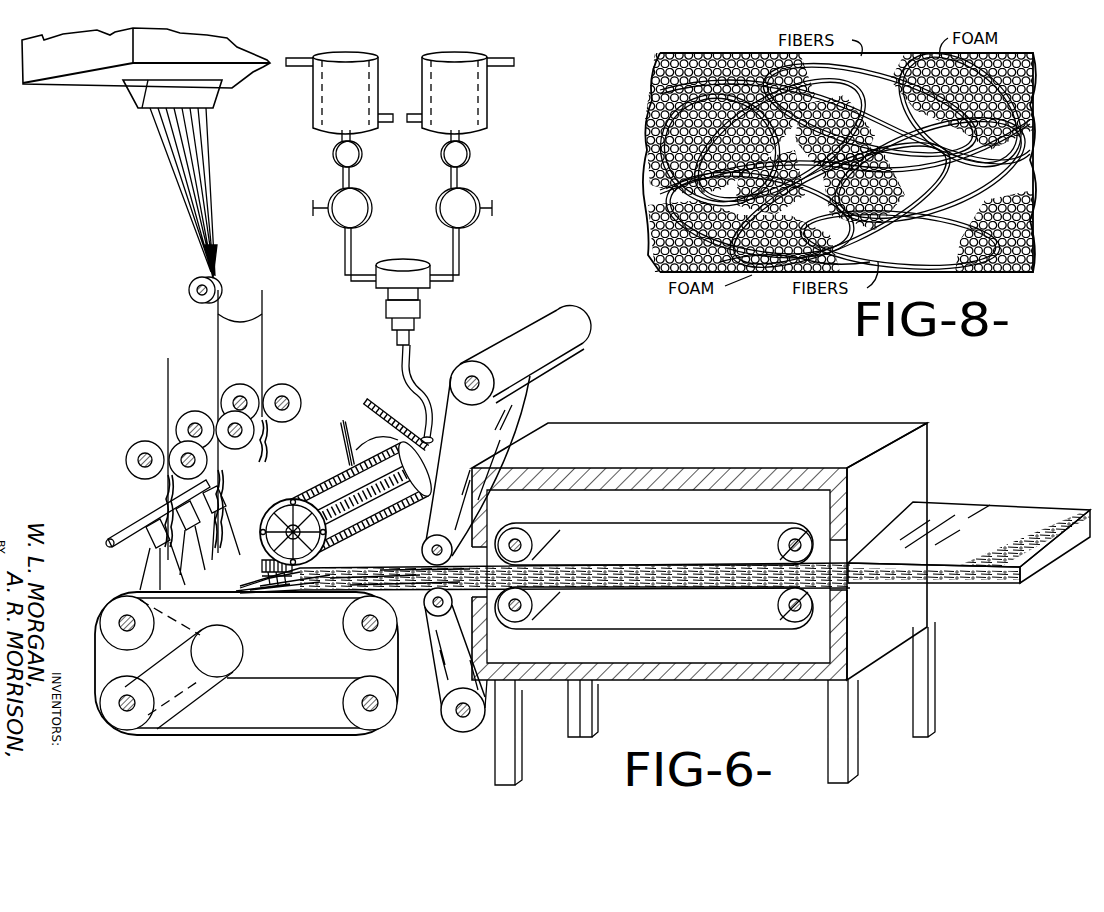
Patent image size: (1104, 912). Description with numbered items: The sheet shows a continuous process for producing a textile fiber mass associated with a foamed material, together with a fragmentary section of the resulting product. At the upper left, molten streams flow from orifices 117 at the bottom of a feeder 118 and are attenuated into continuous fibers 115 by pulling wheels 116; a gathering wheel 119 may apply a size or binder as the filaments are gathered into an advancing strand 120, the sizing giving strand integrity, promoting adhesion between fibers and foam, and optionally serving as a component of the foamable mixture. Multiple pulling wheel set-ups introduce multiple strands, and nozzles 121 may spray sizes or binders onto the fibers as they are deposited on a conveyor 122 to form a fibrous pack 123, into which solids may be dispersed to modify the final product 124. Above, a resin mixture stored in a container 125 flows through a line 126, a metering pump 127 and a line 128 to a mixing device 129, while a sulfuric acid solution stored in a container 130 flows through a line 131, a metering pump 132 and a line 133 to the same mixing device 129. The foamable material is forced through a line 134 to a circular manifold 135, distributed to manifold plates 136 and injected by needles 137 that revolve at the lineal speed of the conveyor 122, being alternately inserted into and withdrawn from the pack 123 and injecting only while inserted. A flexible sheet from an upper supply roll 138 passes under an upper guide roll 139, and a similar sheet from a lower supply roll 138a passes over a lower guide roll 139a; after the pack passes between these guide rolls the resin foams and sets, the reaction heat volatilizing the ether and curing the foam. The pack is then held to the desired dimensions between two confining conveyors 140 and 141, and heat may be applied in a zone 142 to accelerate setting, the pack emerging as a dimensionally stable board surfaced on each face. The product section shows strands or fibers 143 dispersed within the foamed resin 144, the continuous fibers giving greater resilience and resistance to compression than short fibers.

In FIG. 6, the continuous fibers 115 is at (158, 174).
In FIG. 6, the pulling wheels 116 is at (206, 410).
In FIG. 6, the orifices 117 is at (162, 111).
In FIG. 6, the feeder 118 is at (137, 97).
In FIG. 6, the gathering wheel 119 is at (196, 280).
In FIG. 6, the advancing strand 120 is at (170, 358).
In FIG. 6, the nozzles 121 is at (147, 530).
In FIG. 6, the conveyor 122 is at (145, 585).
In FIG. 6, the fibrous pack 123 is at (363, 572).
In FIG. 6, the final product 124 is at (1045, 506).
In FIG. 6, the container 125 is at (323, 130).
In FIG. 6, the line 126 is at (341, 172).
In FIG. 6, the metering pump 127 is at (334, 221).
In FIG. 6, the line 128 is at (344, 259).
In FIG. 6, the mixing device 129 is at (398, 333).
In FIG. 6, the container 130 is at (473, 128).
In FIG. 6, the line 131 is at (460, 172).
In FIG. 6, the metering pump 132 is at (476, 195).
In FIG. 6, the line 133 is at (462, 242).
In FIG. 6, the line 134 is at (404, 378).
In FIG. 6, the circular manifold 135 is at (362, 440).
In FIG. 6, the manifold plates 136 is at (328, 493).
In FIG. 6, the injection needles 137 is at (280, 590).
In FIG. 6, the upper supply roll 138 is at (497, 347).
In FIG. 6, the lower supply roll 138a is at (462, 728).
In FIG. 6, the upper guide roll 139 is at (476, 517).
In FIG. 6, the lower guide roll 139a is at (442, 610).
In FIG. 6, the confining conveyor 140 is at (658, 541).
In FIG. 6, the confining conveyor 141 is at (638, 590).
In FIG. 6, the zone 142 is at (642, 408).
In FIG. 8, the strands or fibers 143 is at (718, 36).
In FIG. 8, the foamed resin 144 is at (768, 273).